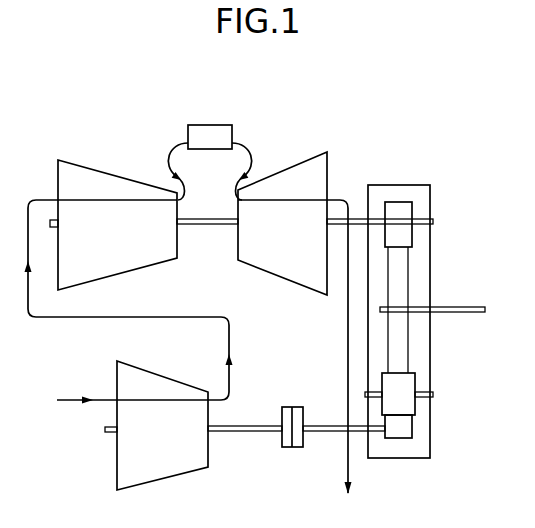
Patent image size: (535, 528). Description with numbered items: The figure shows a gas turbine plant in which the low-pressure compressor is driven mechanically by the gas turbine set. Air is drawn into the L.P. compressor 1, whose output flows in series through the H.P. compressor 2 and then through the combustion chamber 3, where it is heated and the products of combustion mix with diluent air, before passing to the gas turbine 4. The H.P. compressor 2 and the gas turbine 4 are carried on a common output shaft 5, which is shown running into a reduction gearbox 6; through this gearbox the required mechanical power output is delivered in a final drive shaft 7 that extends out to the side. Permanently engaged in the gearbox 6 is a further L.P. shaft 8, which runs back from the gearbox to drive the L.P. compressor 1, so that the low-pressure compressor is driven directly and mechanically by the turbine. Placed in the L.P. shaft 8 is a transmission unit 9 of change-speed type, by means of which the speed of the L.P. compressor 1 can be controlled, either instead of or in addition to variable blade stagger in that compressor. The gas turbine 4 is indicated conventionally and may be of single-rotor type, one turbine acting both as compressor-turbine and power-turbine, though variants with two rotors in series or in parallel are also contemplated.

The L.P. compressor 1 is at (160, 444).
The H.P. compressor 2 is at (118, 244).
The combustion chamber 3 is at (205, 133).
The gas turbine 4 is at (289, 246).
The output shaft 5 is at (209, 226).
The reduction gearbox 6 is at (442, 249).
The final drive shaft 7 is at (464, 313).
The L.P. shaft 8 is at (326, 432).
The transmission unit 9 is at (281, 460).